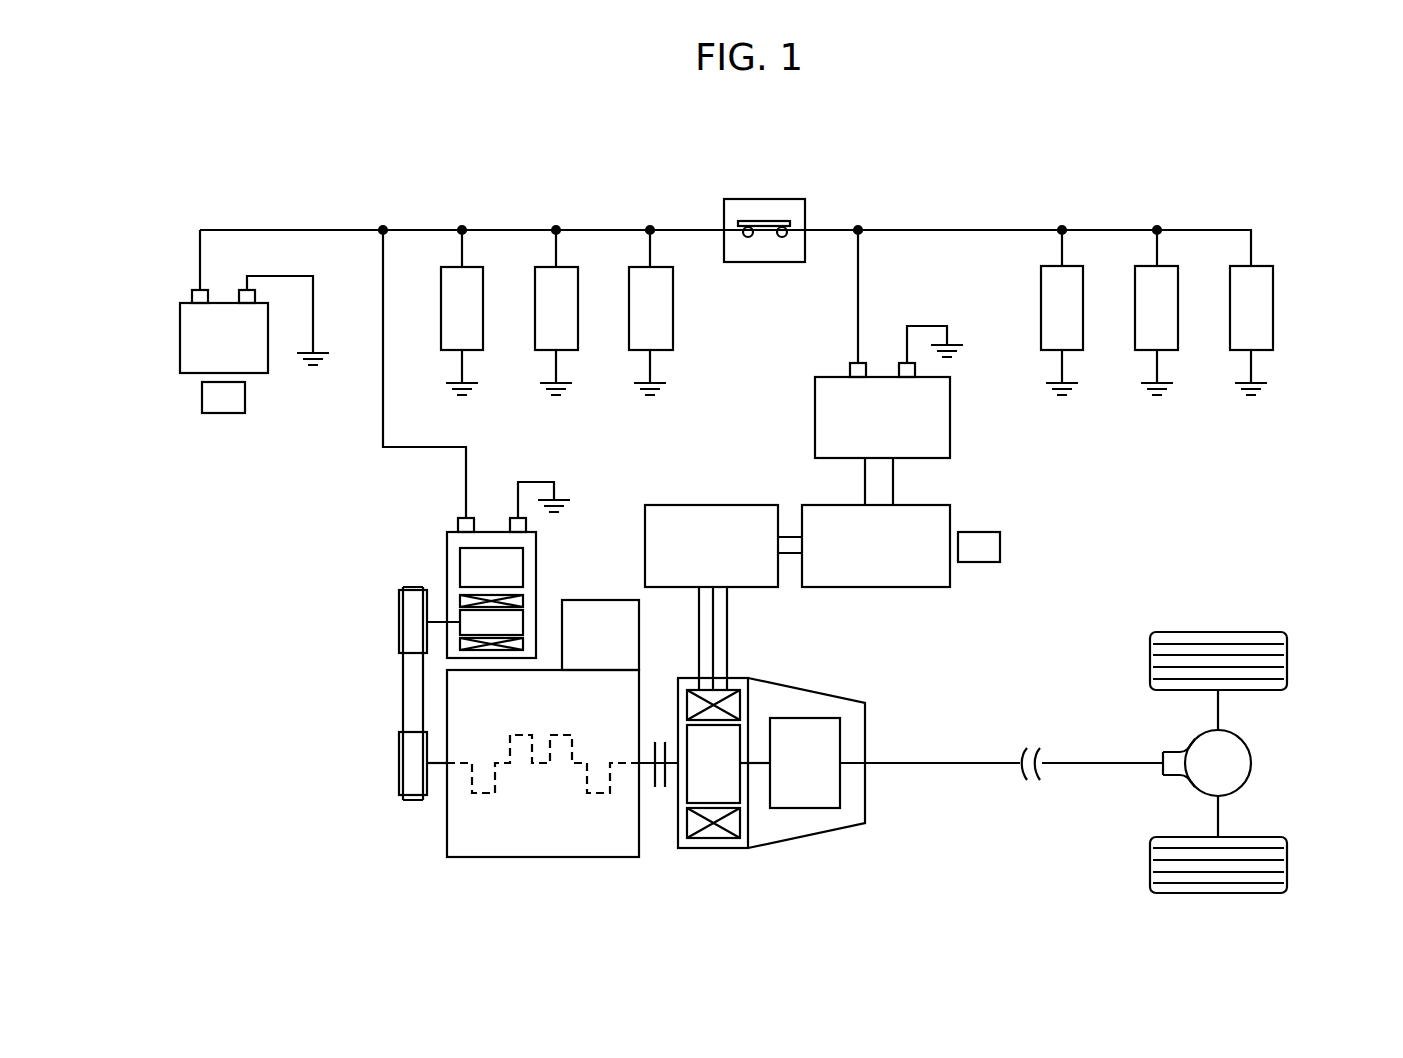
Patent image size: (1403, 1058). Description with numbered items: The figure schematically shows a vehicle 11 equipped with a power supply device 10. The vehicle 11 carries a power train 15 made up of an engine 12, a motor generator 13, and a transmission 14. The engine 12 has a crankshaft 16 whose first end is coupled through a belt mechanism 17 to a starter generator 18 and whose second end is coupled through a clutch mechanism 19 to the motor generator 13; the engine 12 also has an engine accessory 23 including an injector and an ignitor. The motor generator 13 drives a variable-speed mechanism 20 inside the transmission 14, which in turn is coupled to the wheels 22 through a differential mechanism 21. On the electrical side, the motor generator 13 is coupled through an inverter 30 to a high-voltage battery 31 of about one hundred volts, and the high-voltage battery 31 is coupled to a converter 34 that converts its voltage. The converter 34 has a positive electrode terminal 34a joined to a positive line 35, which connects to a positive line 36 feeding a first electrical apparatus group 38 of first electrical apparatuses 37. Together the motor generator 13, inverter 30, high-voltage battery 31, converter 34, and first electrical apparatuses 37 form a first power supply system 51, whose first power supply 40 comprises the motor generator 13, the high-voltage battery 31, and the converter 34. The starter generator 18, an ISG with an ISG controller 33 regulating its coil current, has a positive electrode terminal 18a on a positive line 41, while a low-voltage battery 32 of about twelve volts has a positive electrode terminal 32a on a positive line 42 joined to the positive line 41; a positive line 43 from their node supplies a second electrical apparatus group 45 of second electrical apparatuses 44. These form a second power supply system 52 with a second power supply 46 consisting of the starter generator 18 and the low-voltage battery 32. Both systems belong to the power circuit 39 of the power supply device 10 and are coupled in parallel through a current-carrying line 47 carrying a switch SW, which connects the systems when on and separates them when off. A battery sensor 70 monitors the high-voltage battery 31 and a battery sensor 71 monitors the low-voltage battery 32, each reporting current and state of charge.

The power supply device 10 is at (233, 178).
The vehicle 11 is at (213, 134).
The engine 12 is at (447, 820).
The motor generator 13 is at (705, 848).
The transmission 14 is at (803, 845).
The power train 15 is at (437, 852).
The crankshaft 16 is at (533, 770).
The belt mechanism 17 is at (410, 697).
The starter generator 18 is at (447, 541).
The positive electrode terminal 18a is at (460, 517).
The clutch mechanism 19 is at (655, 749).
The variable-speed mechanism 20 is at (800, 718).
The differential mechanism 21 is at (1251, 763).
The wheels 22 is at (1287, 668).
The engine accessory 23 is at (594, 600).
The inverter 30 is at (722, 505).
The high-voltage battery 31 is at (950, 515).
The low-voltage battery 32 is at (185, 373).
The positive electrode terminal 32a is at (192, 296).
The ISG controller 33 is at (460, 573).
The converter 34 is at (950, 417).
The positive electrode terminal 34a is at (850, 366).
The positive line 35 is at (858, 280).
The positive line 36 is at (991, 230).
The first electrical apparatuses 37 is at (1078, 351).
The first electrical apparatus group 38 is at (1293, 268).
The power circuit 39 is at (1243, 187).
The first power supply 40 is at (1052, 516).
The positive line 41 is at (383, 332).
The positive line 42 is at (200, 270).
The positive line 43 is at (497, 230).
The second electrical apparatuses 44 is at (478, 351).
The second electrical apparatus group 45 is at (693, 336).
The second power supply 46 is at (362, 497).
The current-carrying line 47 is at (676, 230).
The first power supply system 51 is at (1140, 183).
The second power supply system 52 is at (232, 513).
The battery sensor 70 is at (1000, 547).
The battery sensor 71 is at (246, 398).
The switch SW is at (775, 199).